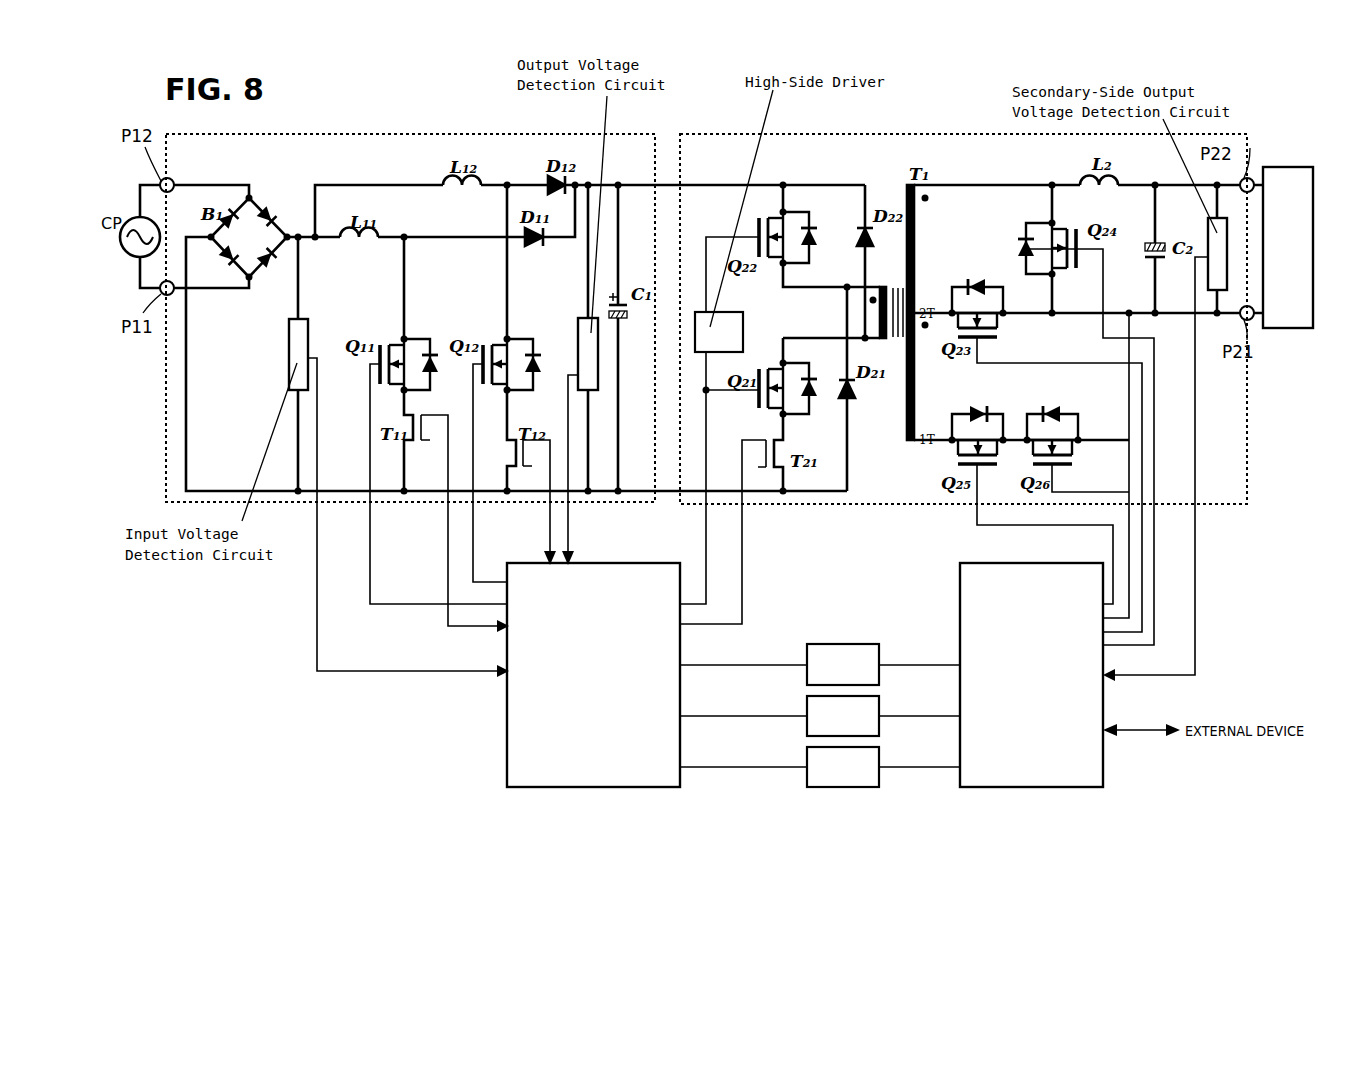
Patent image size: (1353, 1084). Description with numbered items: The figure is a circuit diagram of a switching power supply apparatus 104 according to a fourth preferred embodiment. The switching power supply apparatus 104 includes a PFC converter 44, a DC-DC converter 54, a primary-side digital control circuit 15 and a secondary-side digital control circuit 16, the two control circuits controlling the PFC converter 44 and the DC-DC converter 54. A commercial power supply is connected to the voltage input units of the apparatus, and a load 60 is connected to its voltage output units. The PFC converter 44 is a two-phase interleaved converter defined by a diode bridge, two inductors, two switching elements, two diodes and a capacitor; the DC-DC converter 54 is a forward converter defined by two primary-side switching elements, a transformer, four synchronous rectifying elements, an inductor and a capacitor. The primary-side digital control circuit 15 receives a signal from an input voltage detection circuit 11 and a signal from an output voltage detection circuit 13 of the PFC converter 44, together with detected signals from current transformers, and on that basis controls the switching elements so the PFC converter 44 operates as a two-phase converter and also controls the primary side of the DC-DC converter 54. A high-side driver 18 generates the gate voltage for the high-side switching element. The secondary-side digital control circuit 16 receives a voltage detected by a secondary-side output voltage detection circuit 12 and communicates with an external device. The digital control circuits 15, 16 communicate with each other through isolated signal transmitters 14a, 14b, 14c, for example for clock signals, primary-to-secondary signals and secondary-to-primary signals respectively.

The input voltage detection circuit 11 is at (311, 318).
The secondary-side output voltage detection circuit 12 is at (1208, 222).
The output voltage detection circuit 13 is at (578, 318).
The isolated signal transmitter 14a is at (879, 644).
The isolated signal transmitter 14b is at (879, 696).
The isolated signal transmitter 14c is at (879, 747).
The primary-side digital control circuit 15 is at (680, 563).
The secondary-side digital control circuit 16 is at (960, 563).
The high-side driver 18 is at (743, 330).
The PFC converter 44 is at (418, 134).
The DC-DC converter 54 is at (993, 134).
The load 60 is at (1288, 167).
The switching power supply apparatus 104 is at (1318, 86).